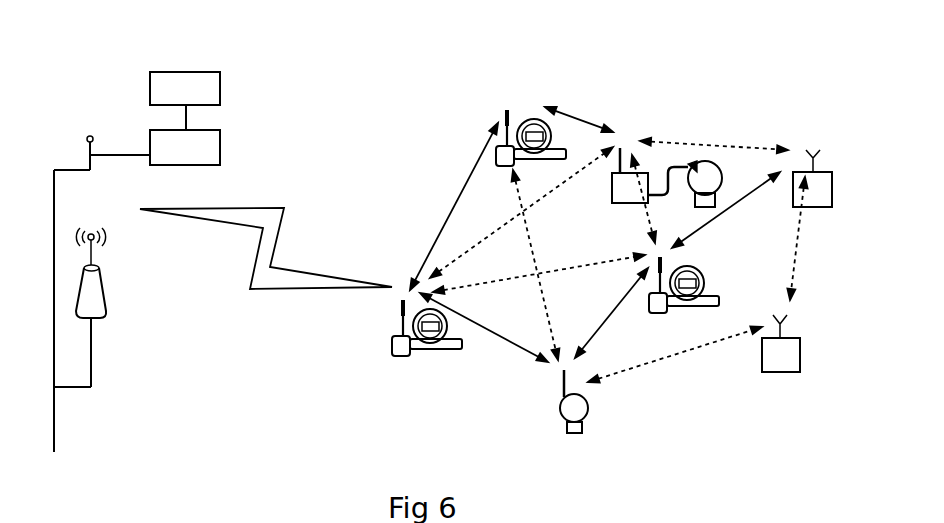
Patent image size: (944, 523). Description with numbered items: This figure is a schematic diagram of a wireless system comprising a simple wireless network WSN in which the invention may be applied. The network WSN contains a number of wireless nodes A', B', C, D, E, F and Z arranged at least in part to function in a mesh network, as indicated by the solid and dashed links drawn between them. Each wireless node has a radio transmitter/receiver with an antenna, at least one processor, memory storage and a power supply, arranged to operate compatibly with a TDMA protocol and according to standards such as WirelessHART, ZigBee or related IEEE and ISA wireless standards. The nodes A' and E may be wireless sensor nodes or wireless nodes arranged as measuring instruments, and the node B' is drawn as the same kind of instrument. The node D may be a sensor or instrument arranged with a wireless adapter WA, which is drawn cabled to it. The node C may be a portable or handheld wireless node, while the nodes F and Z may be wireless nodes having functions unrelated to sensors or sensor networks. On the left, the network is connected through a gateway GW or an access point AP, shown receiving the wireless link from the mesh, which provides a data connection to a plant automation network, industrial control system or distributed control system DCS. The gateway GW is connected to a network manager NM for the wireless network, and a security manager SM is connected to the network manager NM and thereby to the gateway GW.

The distributed control system DCS is at (58, 330).
The gateway GW is at (86, 146).
The security manager SM is at (212, 101).
The network manager NM is at (214, 147).
The access point AP is at (102, 307).
The wireless sensor network WSN is at (405, 122).
The wireless node A' is at (427, 355).
The wireless node B' is at (531, 119).
The wireless node C is at (574, 425).
The wireless node D is at (632, 140).
The wireless node E is at (677, 315).
The wireless node F is at (791, 361).
The wireless adapter WA is at (712, 155).
The wireless node Z is at (812, 156).